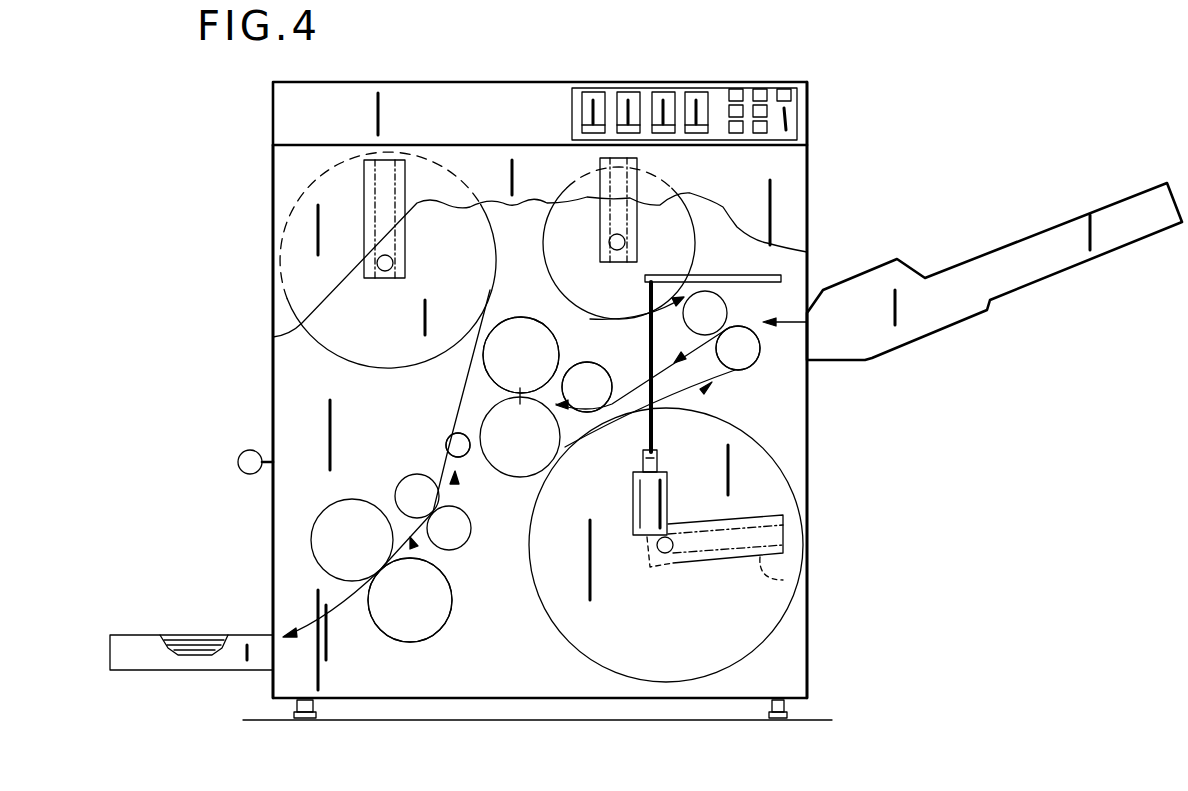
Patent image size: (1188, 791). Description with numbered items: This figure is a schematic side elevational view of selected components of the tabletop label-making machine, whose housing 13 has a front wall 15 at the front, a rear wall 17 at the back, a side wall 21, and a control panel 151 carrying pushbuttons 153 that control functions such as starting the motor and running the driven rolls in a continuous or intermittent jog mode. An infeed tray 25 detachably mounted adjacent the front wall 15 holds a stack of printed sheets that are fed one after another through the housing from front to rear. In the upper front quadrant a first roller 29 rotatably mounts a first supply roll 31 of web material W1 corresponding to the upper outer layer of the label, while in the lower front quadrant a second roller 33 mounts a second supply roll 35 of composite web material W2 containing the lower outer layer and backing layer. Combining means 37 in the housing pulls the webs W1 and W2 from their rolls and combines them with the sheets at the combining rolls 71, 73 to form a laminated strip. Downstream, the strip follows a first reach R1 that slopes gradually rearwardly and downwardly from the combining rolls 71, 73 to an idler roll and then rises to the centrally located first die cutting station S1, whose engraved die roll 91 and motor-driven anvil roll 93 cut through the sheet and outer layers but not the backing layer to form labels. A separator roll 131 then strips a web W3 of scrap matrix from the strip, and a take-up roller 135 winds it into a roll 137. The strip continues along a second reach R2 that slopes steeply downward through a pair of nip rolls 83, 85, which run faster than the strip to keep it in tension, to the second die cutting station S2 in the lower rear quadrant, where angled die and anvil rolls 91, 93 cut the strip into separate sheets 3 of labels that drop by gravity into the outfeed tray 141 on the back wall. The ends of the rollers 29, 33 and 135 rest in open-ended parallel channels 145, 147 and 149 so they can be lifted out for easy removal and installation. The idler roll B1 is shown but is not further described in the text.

The sheets of labels 3 is at (193, 635).
The housing 13 is at (266, 178).
The front wall 15 is at (807, 437).
The rear wall 17 is at (273, 525).
The side wall 21 is at (474, 152).
The infeed tray 25 is at (1000, 245).
The first roller 29 is at (626, 242).
The first supply roll 31 is at (693, 206).
The second roller 33 is at (665, 555).
The second supply roll 35 is at (773, 626).
The combining means 37 is at (770, 364).
The combining roll 71 is at (728, 315).
The combining roll 73 is at (719, 361).
The nip roll 83 is at (397, 480).
The nip roll 85 is at (471, 534).
The die roll 91 is at (497, 392).
The anvil roll 93 is at (500, 478).
The separator roll 131 is at (446, 445).
The take-up roller 135 is at (394, 264).
The scrap roll 137 is at (353, 371).
The outfeed tray 141 is at (148, 635).
The channels 145 is at (655, 164).
The channels 147 is at (783, 580).
The channels 149 is at (398, 284).
The control panel 151 is at (720, 92).
The pushbuttons 153 is at (604, 92).
The roller B1 is at (598, 342).
The first reach R1 is at (638, 372).
The second reach R2 is at (446, 452).
The first die cutting station S1 is at (540, 292).
The second die cutting station S2 is at (455, 633).
The web material W1 is at (667, 306).
The web material W2 is at (727, 376).
The scrap web W3 is at (465, 368).